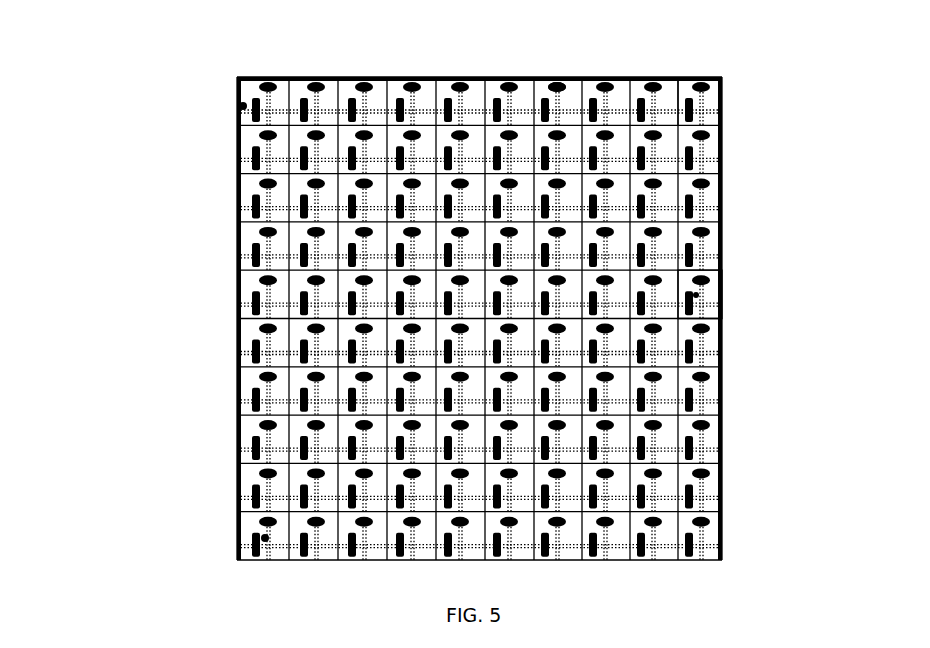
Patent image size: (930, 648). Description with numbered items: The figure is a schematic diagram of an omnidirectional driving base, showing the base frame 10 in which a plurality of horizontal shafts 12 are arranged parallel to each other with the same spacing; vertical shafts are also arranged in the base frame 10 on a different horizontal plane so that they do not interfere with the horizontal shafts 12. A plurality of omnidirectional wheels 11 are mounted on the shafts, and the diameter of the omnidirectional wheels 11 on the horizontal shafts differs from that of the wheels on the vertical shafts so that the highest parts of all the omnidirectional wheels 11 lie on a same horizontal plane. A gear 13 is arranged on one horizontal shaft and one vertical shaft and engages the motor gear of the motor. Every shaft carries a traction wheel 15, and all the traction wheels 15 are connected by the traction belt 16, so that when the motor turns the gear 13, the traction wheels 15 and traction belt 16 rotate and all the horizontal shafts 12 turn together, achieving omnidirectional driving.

The base frame 10 is at (243, 74).
The omnidirectional wheels 11 is at (693, 297).
The horizontal shafts 12 is at (675, 108).
The gear 13 is at (243, 106).
The traction wheel 15 is at (560, 81).
The traction belt 16 is at (447, 78).